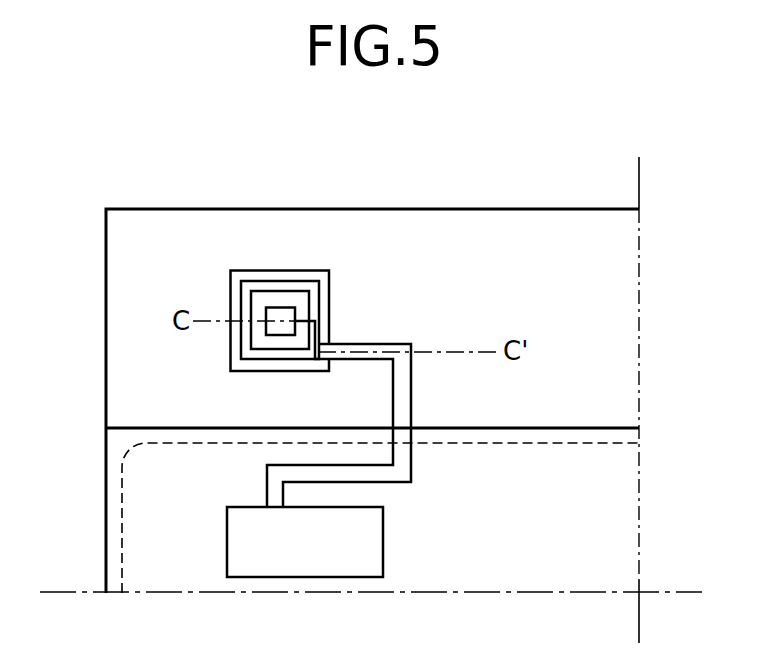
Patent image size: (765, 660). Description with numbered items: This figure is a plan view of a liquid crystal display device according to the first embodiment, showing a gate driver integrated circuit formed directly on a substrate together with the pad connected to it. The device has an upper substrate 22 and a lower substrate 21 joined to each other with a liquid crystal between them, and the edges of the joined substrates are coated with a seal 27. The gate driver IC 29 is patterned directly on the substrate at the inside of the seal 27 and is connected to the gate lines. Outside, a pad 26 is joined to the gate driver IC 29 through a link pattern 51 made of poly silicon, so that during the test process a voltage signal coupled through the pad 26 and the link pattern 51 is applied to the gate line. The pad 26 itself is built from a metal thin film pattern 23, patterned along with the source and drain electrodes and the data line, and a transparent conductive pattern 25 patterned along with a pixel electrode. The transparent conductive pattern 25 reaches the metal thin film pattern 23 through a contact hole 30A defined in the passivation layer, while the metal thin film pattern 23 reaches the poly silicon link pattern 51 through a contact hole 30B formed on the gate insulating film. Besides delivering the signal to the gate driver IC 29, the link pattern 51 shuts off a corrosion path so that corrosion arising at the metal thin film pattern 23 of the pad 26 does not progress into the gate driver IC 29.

The lower substrate 21 is at (507, 207).
The upper substrate 22 is at (473, 427).
The metal thin film pattern 23 is at (320, 323).
The transparent conductive pattern 25 is at (331, 281).
The pad 26 is at (272, 255).
The seal 27 is at (589, 441).
The gate driver IC 29 is at (385, 540).
The contact hole 30A is at (295, 307).
The contact hole 30B is at (281, 291).
The link pattern 51 is at (411, 400).